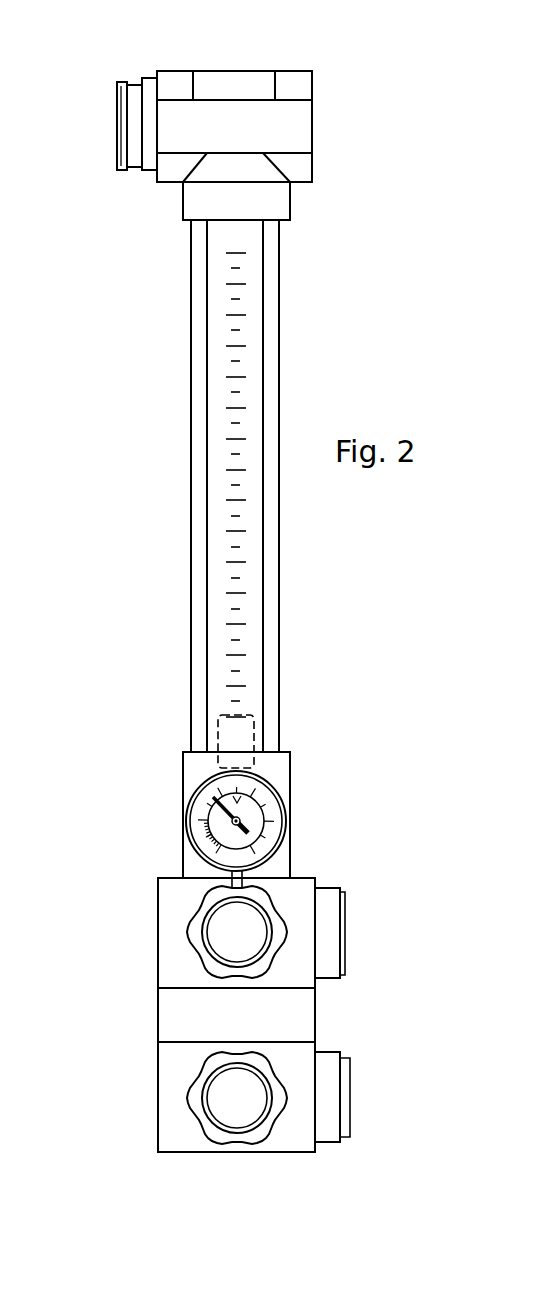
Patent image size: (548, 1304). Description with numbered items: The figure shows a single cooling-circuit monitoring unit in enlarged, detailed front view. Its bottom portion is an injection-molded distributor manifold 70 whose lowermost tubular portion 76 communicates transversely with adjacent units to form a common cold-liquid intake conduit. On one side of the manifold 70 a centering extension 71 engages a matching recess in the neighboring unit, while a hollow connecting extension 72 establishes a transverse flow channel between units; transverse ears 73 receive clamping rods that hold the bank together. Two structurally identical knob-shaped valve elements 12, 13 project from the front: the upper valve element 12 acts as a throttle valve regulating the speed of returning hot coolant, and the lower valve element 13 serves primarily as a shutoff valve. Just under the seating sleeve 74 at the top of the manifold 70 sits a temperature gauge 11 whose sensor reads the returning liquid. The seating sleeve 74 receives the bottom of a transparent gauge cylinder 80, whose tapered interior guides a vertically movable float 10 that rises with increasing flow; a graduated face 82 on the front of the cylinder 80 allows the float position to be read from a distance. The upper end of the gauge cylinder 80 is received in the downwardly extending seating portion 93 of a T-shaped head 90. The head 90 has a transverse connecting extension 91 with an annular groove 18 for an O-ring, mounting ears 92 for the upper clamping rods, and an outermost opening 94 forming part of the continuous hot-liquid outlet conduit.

The float 10 is at (242, 740).
The temperature gauge 11 is at (252, 813).
The valve element 12 is at (257, 900).
The valve element 13 is at (197, 1097).
The annular groove 18 is at (135, 97).
The distributor manifold 70 is at (145, 1015).
The centering extension 71 is at (327, 925).
The connecting extension 72 is at (325, 1083).
The transverse ears 73 is at (292, 1015).
The seating sleeve 74 is at (275, 771).
The tubular portion 76 is at (185, 1138).
The gauge cylinder 80 is at (317, 360).
The graduated face 82 is at (252, 263).
The head 90 is at (235, 56).
The connecting extension 91 is at (127, 118).
The mounting ears 92 is at (242, 115).
The seating portion 93 is at (268, 195).
The outermost opening 94 is at (298, 88).